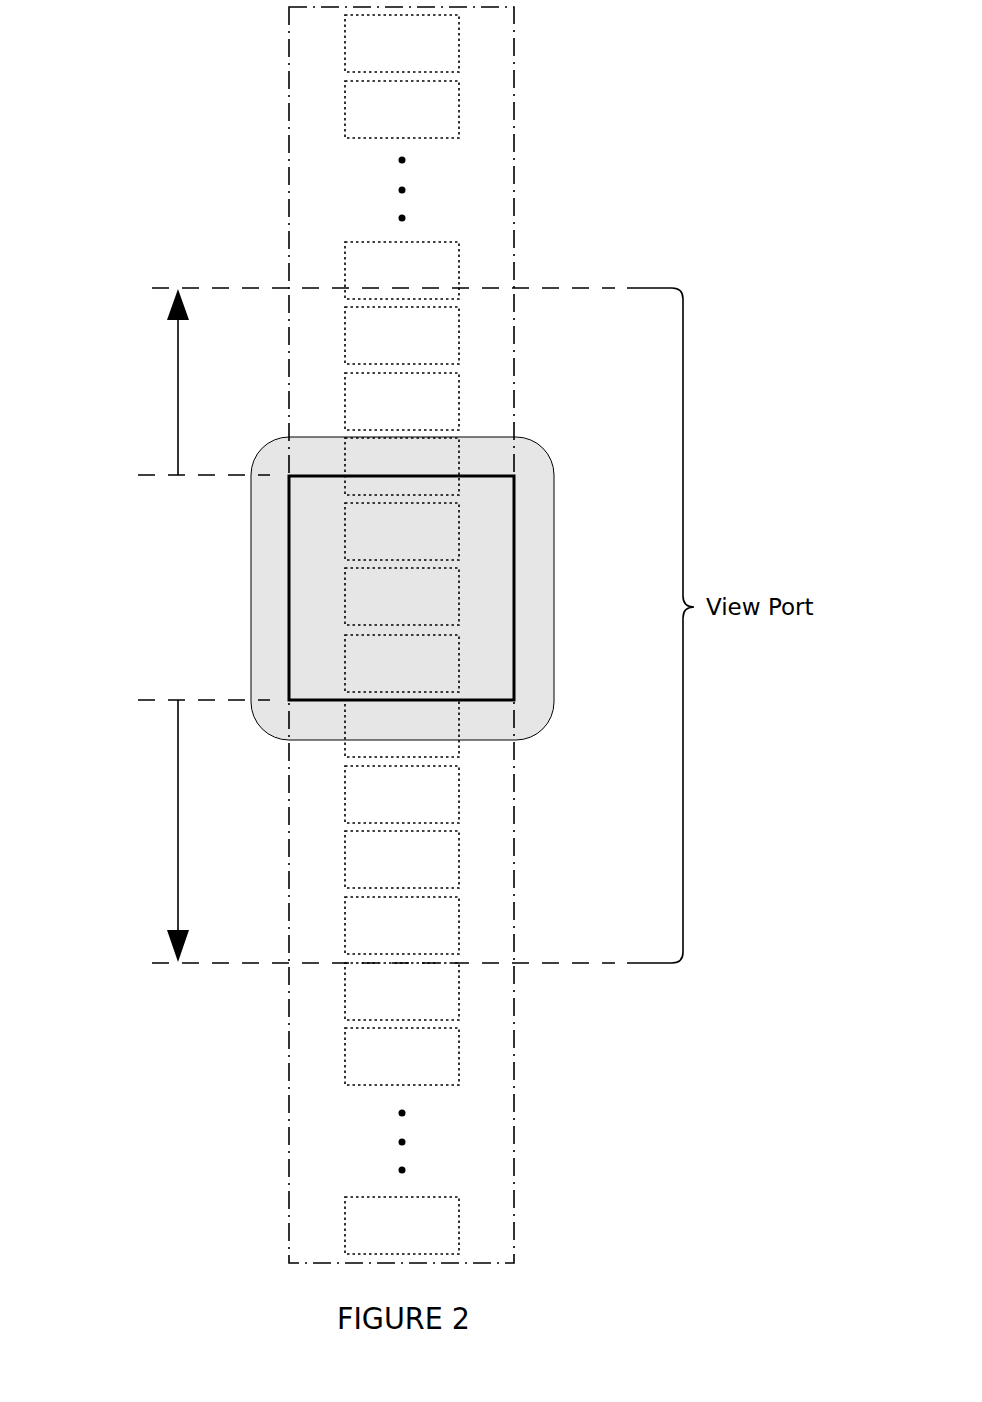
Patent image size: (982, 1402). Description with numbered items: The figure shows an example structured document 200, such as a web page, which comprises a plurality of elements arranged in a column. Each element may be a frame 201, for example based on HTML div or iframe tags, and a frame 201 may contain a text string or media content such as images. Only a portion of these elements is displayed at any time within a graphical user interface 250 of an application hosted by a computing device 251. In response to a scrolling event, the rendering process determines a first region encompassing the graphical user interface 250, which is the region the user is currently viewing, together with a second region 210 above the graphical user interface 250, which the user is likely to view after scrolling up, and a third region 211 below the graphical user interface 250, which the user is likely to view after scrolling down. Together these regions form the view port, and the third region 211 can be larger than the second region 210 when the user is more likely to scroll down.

The structured document 200 is at (289, 100).
The frame 201 is at (459, 108).
The second region 210 is at (160, 400).
The third region 211 is at (160, 850).
The graphical user interface 250 is at (289, 588).
The computing device 251 is at (251, 626).